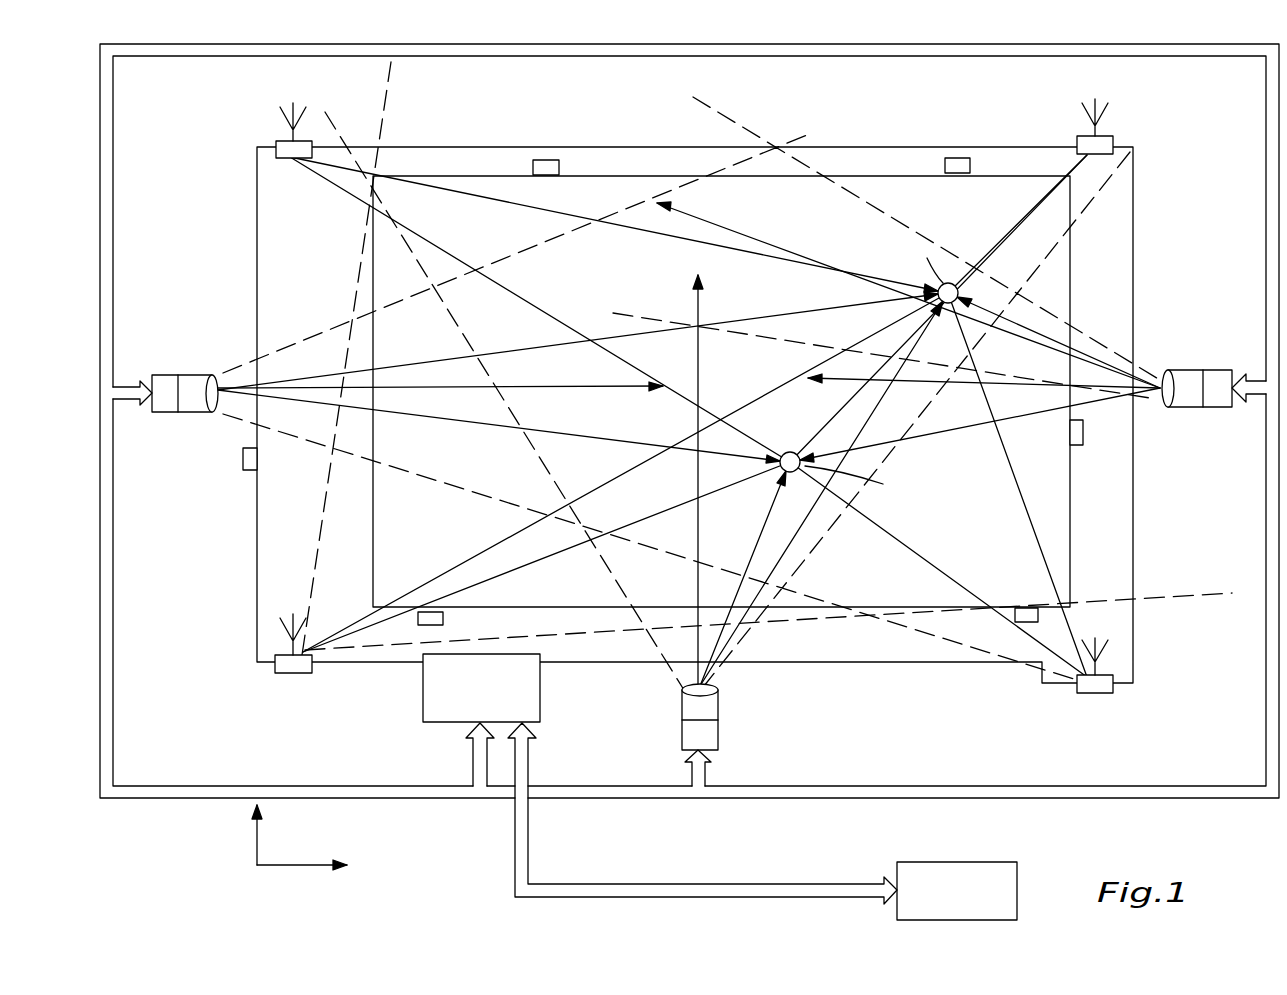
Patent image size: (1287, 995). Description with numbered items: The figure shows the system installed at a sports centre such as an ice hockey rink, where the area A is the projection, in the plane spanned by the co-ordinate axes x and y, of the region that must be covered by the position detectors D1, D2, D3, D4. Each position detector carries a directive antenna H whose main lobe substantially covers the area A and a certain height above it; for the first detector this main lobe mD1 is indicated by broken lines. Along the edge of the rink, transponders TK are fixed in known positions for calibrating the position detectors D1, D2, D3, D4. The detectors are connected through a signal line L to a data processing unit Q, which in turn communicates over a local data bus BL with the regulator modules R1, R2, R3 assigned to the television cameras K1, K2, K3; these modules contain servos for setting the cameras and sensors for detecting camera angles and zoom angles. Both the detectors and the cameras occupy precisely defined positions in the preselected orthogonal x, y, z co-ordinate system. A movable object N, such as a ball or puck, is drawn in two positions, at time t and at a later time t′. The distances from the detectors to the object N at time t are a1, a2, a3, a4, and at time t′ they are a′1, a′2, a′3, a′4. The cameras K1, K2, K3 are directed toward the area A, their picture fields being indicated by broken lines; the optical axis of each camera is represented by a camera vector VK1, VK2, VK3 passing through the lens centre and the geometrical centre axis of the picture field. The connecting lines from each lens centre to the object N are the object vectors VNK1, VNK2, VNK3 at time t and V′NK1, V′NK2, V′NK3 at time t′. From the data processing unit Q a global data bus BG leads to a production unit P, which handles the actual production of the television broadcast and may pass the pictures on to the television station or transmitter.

The local data bus BL is at (821, 57).
The signal line L is at (257, 227).
The area A is at (1072, 487).
The position detector D1 is at (287, 677).
The position detector D2 is at (1097, 693).
The position detector D3 is at (1102, 143).
The position detector D4 is at (277, 143).
The antenna H is at (293, 107).
The transponder TK is at (548, 160).
The television camera K1 is at (200, 375).
The television camera K2 is at (720, 697).
The television camera K3 is at (1190, 370).
The regulator module R1 is at (165, 413).
The regulator module R2 is at (682, 737).
The regulator module R3 is at (1218, 407).
The movable object N is at (960, 294).
The data processing unit Q is at (567, 720).
The production unit P is at (957, 891).
The global data bus BG is at (677, 884).
The main lobe of position detector D1 mD1 is at (310, 577).
The distance from position detector D1 to object at time t a1 is at (537, 562).
The distance from position detector D2 to object at time t a2 is at (920, 553).
The distance from position detector D3 to object at time t a3 is at (1012, 240).
The distance from position detector D4 to object at time t a4 is at (540, 307).
The distance from position detector D1 to object at time t' a′1 is at (763, 392).
The distance from position detector D2 to object at time t' a′2 is at (1023, 505).
The distance from position detector D3 to object at time t' a′3 is at (1015, 230).
The distance from position detector D4 to object at time t' a′4 is at (670, 230).
The camera vector VK1 is at (560, 389).
The camera vector VK2 is at (696, 468).
The camera vector VK3 is at (733, 232).
The object vector VNK1 is at (520, 430).
The object vector VNK2 is at (747, 567).
The object vector VNK3 is at (1027, 413).
The object vector at time t' V′NK1 is at (777, 310).
The object vector at time t' V′NK2 is at (798, 542).
The object vector at time t' V′NK3 is at (1073, 350).
The x axis x is at (302, 852).
The y axis y is at (248, 835).